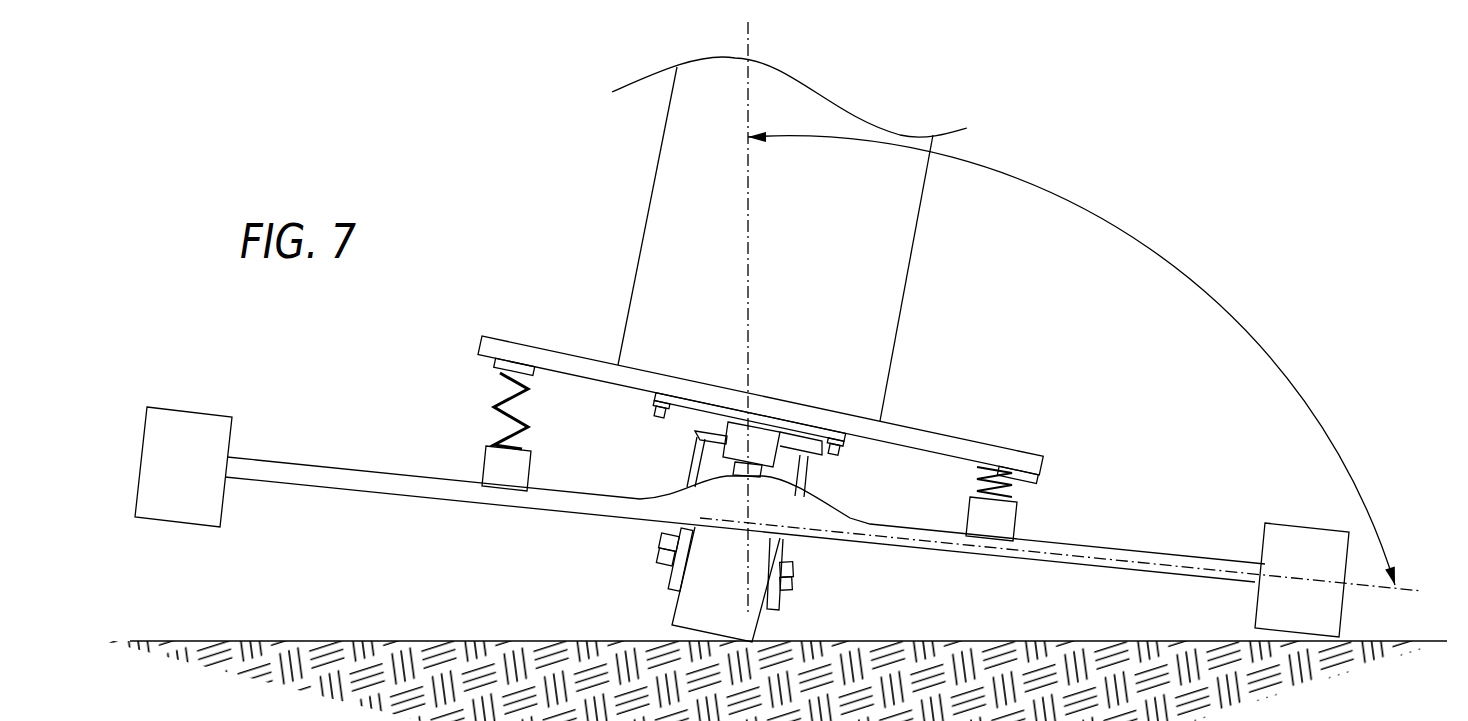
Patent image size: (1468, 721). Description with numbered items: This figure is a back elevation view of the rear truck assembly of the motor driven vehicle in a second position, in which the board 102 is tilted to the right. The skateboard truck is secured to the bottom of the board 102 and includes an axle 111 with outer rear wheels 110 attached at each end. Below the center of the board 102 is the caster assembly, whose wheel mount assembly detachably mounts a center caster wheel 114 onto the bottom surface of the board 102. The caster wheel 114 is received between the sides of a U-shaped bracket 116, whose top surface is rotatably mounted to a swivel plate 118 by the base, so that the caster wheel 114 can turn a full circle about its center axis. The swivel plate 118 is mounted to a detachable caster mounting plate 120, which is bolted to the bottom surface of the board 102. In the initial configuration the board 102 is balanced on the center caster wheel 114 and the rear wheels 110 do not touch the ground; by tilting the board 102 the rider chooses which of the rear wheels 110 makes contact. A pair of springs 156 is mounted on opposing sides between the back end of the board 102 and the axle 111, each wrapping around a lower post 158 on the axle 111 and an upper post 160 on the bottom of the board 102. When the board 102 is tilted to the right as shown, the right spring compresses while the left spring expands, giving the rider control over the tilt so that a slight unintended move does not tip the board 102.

The board 102 is at (962, 454).
The rear wheels 110 is at (145, 430).
The axle 111 is at (279, 474).
The center caster wheel 114 is at (750, 622).
The U-shaped bracket 116 is at (783, 545).
The swivel plate 118 is at (692, 418).
The caster mounting plate 120 is at (840, 437).
The springs 156 is at (497, 407).
The lower posts 158 is at (486, 463).
The upper posts 160 is at (496, 374).